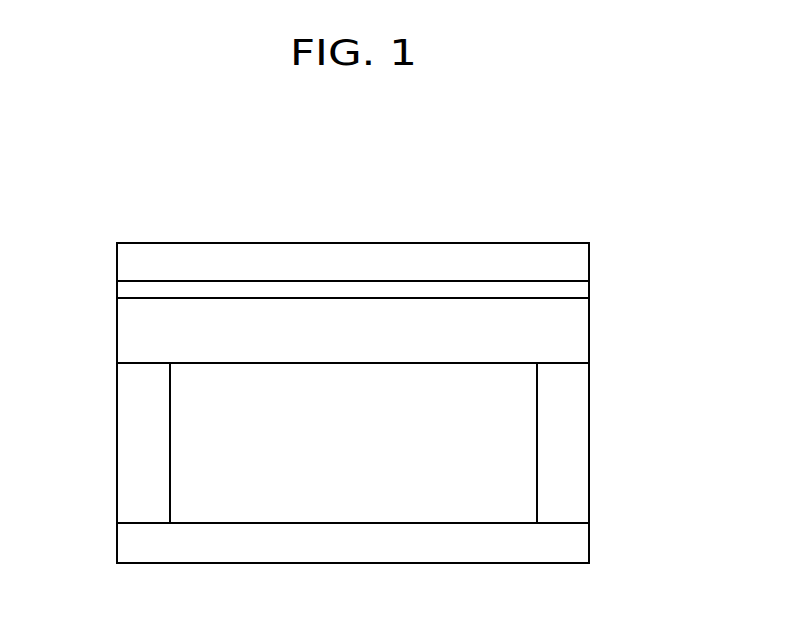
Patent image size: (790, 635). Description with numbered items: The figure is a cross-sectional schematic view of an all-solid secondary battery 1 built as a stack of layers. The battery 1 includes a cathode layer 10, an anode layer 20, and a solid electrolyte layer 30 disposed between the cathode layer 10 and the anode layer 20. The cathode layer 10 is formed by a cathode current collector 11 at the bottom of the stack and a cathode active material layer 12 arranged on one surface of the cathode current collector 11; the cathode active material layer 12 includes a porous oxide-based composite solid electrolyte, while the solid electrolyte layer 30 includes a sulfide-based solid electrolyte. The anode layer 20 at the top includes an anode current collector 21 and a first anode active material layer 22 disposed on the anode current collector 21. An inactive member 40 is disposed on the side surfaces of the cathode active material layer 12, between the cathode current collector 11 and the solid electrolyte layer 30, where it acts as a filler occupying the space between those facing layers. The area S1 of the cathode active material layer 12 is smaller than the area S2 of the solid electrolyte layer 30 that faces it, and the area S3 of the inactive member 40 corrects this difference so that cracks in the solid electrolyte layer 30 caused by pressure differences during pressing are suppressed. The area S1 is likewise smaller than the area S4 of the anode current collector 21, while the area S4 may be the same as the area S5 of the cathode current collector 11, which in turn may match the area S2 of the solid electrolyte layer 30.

The all-solid secondary battery 1 is at (680, 166).
The cathode layer 10 is at (422, 463).
The cathode current collector 11 is at (527, 541).
The cathode active material layer 12 is at (468, 473).
The anode layer 20 is at (425, 274).
The anode current collector 21 is at (585, 259).
The first anode active material layer 22 is at (585, 292).
The solid electrolyte layer 30 is at (570, 330).
The inactive member 40 is at (570, 420).
The area of the cathode active material layer S1 is at (240, 363).
The area of the solid electrolyte layer S2 is at (263, 363).
The area of the inactive member S3 is at (142, 363).
The area of the anode current collector S4 is at (160, 243).
The area of the cathode current collector S5 is at (160, 564).